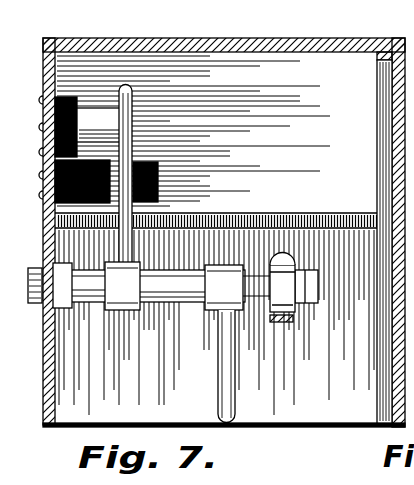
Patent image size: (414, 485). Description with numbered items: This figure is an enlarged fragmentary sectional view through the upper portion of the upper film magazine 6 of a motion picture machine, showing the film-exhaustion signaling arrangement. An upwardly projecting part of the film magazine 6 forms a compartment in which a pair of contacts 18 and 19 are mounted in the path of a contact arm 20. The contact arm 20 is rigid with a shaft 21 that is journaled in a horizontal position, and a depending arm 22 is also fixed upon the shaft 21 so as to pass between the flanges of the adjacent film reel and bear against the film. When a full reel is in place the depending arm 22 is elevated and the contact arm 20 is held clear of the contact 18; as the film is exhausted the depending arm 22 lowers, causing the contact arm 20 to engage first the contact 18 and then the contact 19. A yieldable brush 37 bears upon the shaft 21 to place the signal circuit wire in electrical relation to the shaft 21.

The upper film magazine 6 is at (249, 42).
The contact 18 is at (88, 150).
The contact 19 is at (150, 161).
The contact arm 20 is at (133, 96).
The shaft 21 is at (173, 286).
The depending arm 22 is at (236, 408).
The yieldable brush 37 is at (296, 262).